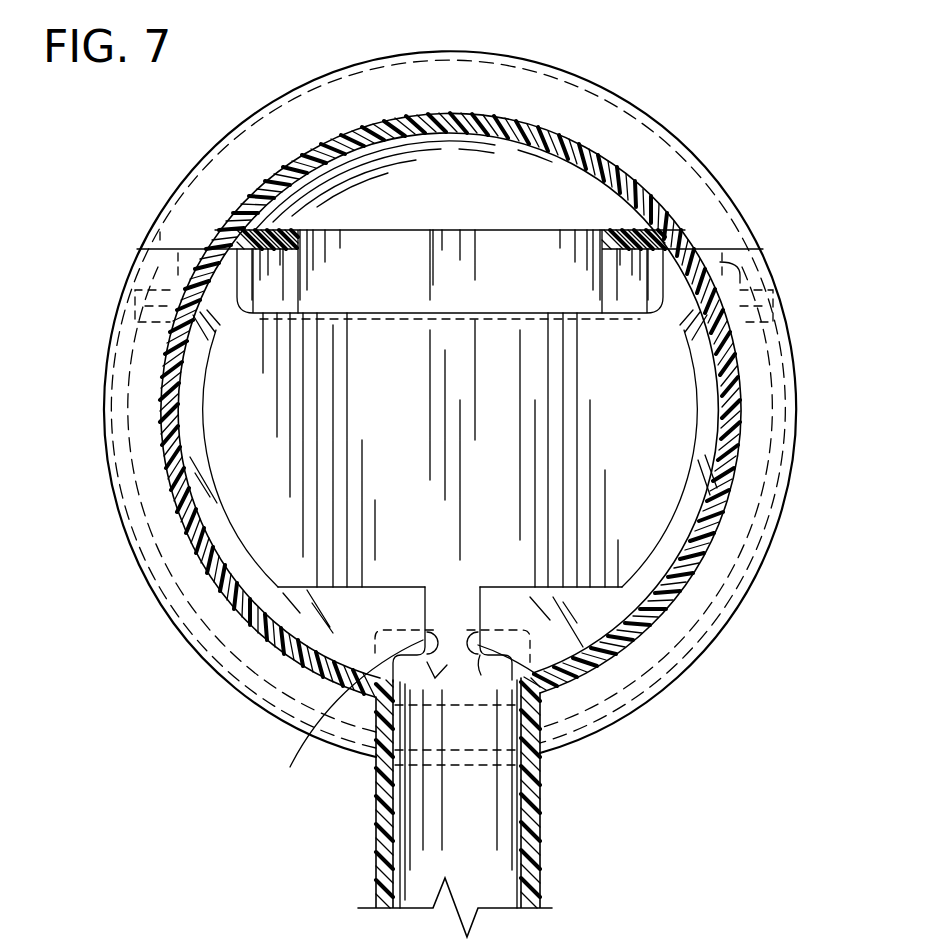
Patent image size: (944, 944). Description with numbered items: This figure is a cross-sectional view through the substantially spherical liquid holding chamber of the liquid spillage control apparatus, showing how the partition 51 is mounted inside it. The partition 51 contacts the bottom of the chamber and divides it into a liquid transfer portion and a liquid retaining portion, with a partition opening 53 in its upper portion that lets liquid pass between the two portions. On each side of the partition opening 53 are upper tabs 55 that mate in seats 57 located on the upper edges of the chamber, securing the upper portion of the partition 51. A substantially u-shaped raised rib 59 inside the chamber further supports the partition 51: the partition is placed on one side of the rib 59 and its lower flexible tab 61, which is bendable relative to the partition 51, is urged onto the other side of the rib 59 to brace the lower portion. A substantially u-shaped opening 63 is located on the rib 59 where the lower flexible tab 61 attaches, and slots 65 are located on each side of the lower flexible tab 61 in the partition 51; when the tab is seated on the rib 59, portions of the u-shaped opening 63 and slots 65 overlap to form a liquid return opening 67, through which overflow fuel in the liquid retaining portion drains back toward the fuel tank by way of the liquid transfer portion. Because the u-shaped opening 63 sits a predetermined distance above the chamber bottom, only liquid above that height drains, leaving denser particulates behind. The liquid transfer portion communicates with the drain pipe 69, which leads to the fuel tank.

The partition 51 is at (432, 411).
The partition opening 53 is at (538, 308).
The upper tabs 55 is at (738, 270).
The seats 57 is at (207, 278).
The raised rib 59 is at (698, 542).
The lower flexible tab 61 is at (540, 795).
The u-shaped opening 63 is at (376, 660).
The slots 65 is at (291, 768).
The liquid return opening 67 is at (468, 631).
The drain pipe 69 is at (428, 822).